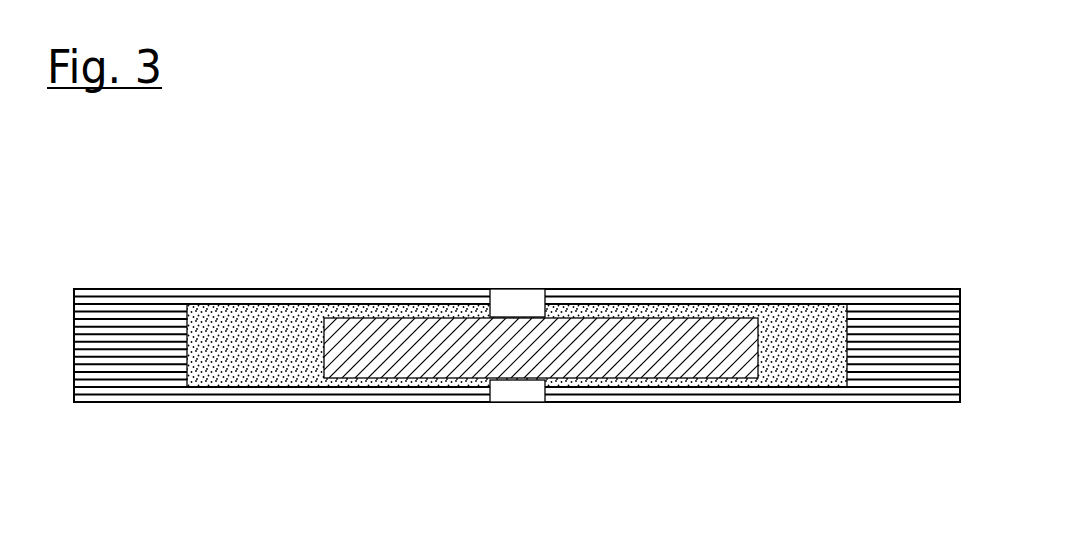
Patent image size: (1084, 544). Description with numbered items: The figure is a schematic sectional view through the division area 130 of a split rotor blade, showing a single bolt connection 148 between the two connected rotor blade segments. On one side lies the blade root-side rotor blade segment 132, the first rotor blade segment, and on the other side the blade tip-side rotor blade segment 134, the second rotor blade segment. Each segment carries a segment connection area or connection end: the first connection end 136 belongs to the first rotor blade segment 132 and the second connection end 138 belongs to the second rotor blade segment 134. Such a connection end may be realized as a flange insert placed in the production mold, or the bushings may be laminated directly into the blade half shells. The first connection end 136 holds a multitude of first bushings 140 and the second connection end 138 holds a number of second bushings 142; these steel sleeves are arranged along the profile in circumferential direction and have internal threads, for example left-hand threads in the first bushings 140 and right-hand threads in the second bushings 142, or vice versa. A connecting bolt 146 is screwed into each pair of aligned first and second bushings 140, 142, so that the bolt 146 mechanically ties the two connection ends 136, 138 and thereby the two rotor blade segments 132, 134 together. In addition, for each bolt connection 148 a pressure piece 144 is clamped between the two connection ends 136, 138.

The division area 130 is at (517, 408).
The blade root-side rotor blade segment 132 is at (128, 384).
The blade tip-side rotor blade segment 134 is at (897, 297).
The first connection end 136 is at (492, 288).
The second connection end 138 is at (543, 288).
The first bushings 140 is at (273, 390).
The second bushings 142 is at (817, 382).
The pressure piece 144 is at (503, 387).
The connecting bolt 146 is at (687, 400).
The bolt connection 148 is at (710, 208).